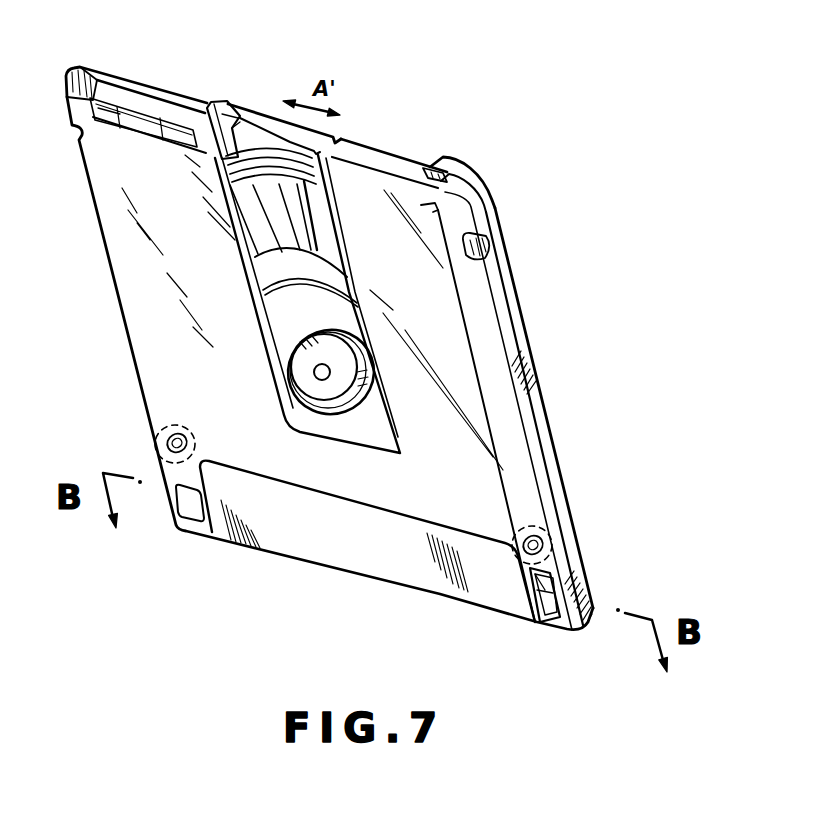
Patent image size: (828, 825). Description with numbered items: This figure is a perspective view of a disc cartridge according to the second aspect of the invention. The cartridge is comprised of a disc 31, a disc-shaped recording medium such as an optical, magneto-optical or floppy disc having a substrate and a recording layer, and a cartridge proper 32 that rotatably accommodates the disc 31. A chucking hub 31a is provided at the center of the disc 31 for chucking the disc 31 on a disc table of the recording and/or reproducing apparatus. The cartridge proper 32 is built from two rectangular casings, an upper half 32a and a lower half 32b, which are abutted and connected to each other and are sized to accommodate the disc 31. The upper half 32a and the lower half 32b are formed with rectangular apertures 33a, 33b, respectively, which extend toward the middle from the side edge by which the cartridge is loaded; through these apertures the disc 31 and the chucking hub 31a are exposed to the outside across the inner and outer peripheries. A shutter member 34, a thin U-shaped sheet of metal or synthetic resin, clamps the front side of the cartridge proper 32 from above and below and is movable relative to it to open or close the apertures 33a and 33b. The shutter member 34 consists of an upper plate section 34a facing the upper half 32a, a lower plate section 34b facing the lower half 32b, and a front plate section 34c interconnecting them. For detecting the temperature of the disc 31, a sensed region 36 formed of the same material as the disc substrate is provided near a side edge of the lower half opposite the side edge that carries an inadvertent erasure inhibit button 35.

The disc 31 is at (330, 139).
The chucking hub 31a is at (297, 357).
The cartridge proper 32 is at (515, 254).
The upper half 32a is at (533, 381).
The lower half 32b is at (514, 441).
The rectangular aperture 33a is at (283, 197).
The rectangular aperture 33b is at (239, 114).
The shutter member 34 is at (386, 141).
The upper plate section 34a is at (421, 170).
The lower plate section 34b is at (390, 222).
The front plate section 34c is at (425, 169).
The inadvertent erasure inhibit button 35 is at (550, 608).
The sensed region 36 is at (188, 512).